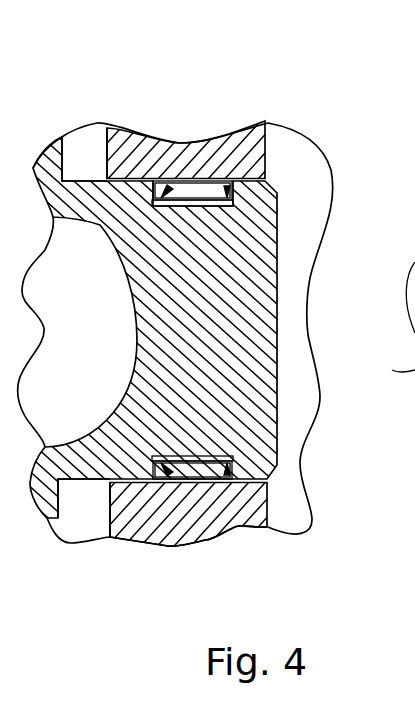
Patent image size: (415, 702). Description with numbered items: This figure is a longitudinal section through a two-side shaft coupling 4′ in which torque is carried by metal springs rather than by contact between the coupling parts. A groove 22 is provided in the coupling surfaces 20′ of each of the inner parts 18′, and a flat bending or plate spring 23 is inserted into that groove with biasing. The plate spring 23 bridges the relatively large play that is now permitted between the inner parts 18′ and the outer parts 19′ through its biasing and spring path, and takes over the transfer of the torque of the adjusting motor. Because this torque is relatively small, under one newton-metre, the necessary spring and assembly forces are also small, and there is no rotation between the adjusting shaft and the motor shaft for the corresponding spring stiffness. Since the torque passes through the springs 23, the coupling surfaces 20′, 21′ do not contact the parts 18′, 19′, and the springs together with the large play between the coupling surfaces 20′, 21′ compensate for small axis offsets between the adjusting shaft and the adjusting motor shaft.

The two-side shaft coupling 4′ is at (313, 118).
The inner part 18′ is at (256, 358).
The outer part 19′ is at (150, 168).
The coupling surface 20′ is at (272, 152).
The coupling surface 21′ is at (143, 228).
The groove 22 is at (186, 194).
The plate spring 23 is at (213, 196).